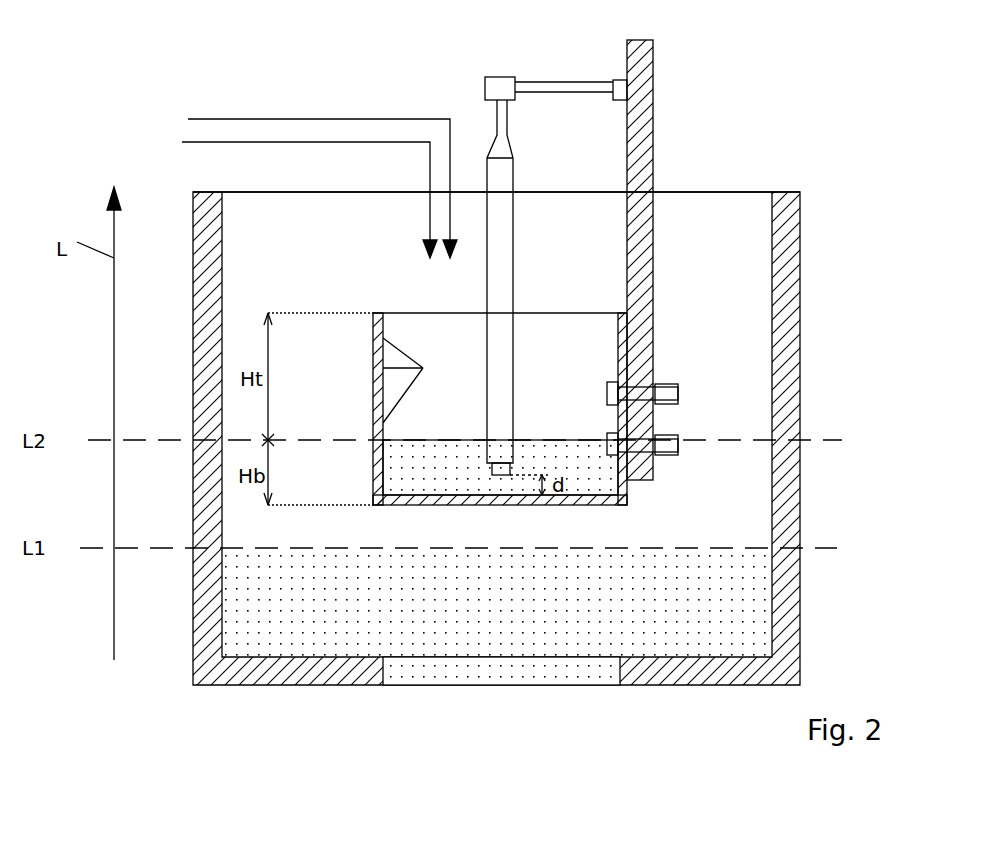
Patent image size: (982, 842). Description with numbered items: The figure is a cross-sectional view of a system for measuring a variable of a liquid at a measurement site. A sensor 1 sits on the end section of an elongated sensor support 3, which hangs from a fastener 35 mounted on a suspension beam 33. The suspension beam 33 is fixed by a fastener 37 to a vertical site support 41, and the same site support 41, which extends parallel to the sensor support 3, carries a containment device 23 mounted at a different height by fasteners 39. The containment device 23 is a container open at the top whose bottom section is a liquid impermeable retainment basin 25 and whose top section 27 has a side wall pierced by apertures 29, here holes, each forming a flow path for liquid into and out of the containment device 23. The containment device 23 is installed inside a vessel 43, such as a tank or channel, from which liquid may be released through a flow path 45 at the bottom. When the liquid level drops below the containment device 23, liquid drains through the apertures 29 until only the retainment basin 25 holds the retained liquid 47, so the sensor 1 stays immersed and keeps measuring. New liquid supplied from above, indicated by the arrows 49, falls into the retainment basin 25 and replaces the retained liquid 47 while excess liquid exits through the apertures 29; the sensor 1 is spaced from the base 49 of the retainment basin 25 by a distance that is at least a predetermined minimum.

The sensor 1 is at (505, 465).
The sensor support 3 is at (500, 265).
The containment device 23 is at (452, 409).
The retainment basin 25 is at (374, 481).
The top section 27 is at (378, 385).
The apertures 29 is at (420, 380).
The suspension beam 33 is at (570, 87).
The fastener 35 is at (502, 88).
The fastener 37 is at (622, 87).
The fastener 39 is at (652, 380).
The site support 41 is at (643, 268).
The vessel 43 is at (805, 445).
The flow path 45 is at (480, 676).
The retained liquid 47 is at (463, 481).
The arrows / base 49 is at (342, 140).